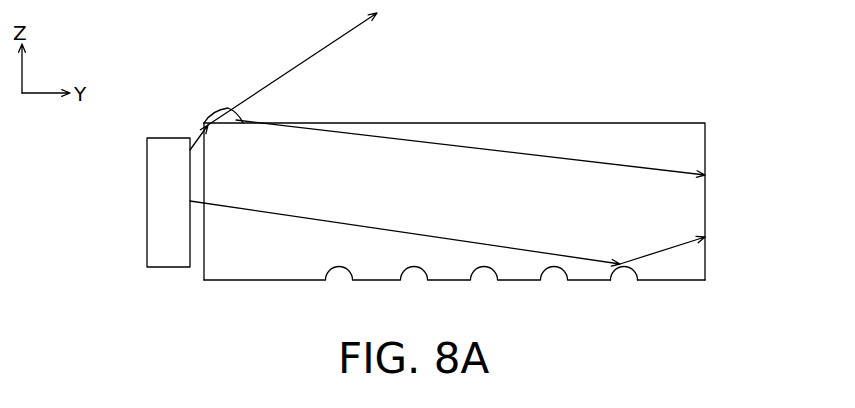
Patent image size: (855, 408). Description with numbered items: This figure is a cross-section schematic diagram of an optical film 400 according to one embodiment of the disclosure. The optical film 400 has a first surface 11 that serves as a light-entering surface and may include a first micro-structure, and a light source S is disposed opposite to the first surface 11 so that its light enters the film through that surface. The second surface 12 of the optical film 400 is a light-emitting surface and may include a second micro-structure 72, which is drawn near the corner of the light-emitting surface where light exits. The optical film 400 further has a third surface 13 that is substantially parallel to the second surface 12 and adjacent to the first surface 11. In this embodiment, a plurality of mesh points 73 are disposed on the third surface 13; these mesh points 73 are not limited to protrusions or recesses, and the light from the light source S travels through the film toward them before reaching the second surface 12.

The optical film 400 is at (814, 43).
The light source S is at (163, 203).
The first surface 11 is at (199, 279).
The second surface 12 is at (618, 115).
The third surface 13 is at (672, 290).
The second micro-structure 72 is at (222, 111).
The mesh points 73 is at (622, 284).